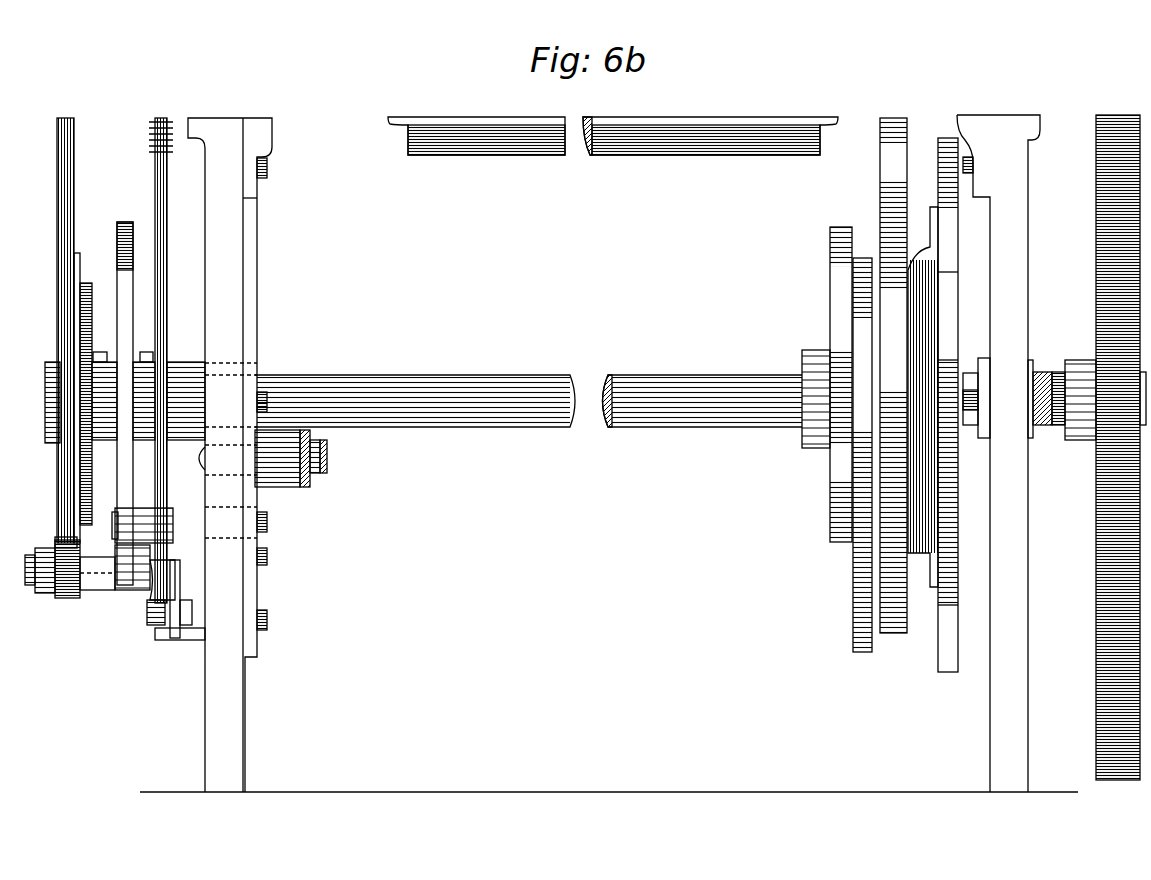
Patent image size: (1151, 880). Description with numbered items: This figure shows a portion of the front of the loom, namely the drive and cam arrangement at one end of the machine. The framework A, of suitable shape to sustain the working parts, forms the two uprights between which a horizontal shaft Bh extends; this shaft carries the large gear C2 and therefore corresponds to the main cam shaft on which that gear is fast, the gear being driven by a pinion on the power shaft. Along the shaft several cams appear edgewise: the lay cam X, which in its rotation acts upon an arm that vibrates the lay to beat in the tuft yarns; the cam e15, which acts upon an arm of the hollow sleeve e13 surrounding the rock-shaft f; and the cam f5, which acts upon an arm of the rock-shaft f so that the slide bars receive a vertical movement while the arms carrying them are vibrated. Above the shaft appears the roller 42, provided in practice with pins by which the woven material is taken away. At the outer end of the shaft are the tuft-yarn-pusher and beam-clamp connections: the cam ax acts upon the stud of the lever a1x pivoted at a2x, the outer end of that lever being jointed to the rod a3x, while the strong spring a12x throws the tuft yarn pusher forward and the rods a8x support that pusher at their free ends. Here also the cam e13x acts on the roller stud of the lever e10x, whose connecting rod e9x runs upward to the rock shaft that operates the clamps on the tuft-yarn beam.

The framework A is at (243, 707).
The roller 42 is at (505, 155).
The shaft Bh is at (670, 387).
The hollow sleeve e13 is at (287, 488).
The rock-shaft f is at (328, 462).
The connecting rod e9x is at (72, 152).
The cam e13x is at (77, 253).
The cam ax is at (128, 222).
The rod a3x is at (166, 212).
The spring a12x is at (164, 133).
The pivot a2x is at (113, 524).
The lever e10x is at (45, 592).
The lever a1x is at (180, 590).
The cam e15 is at (830, 244).
The rods a8x is at (860, 258).
The lay cam X is at (905, 140).
The cam f5 is at (938, 160).
The large gear C2 is at (1094, 278).